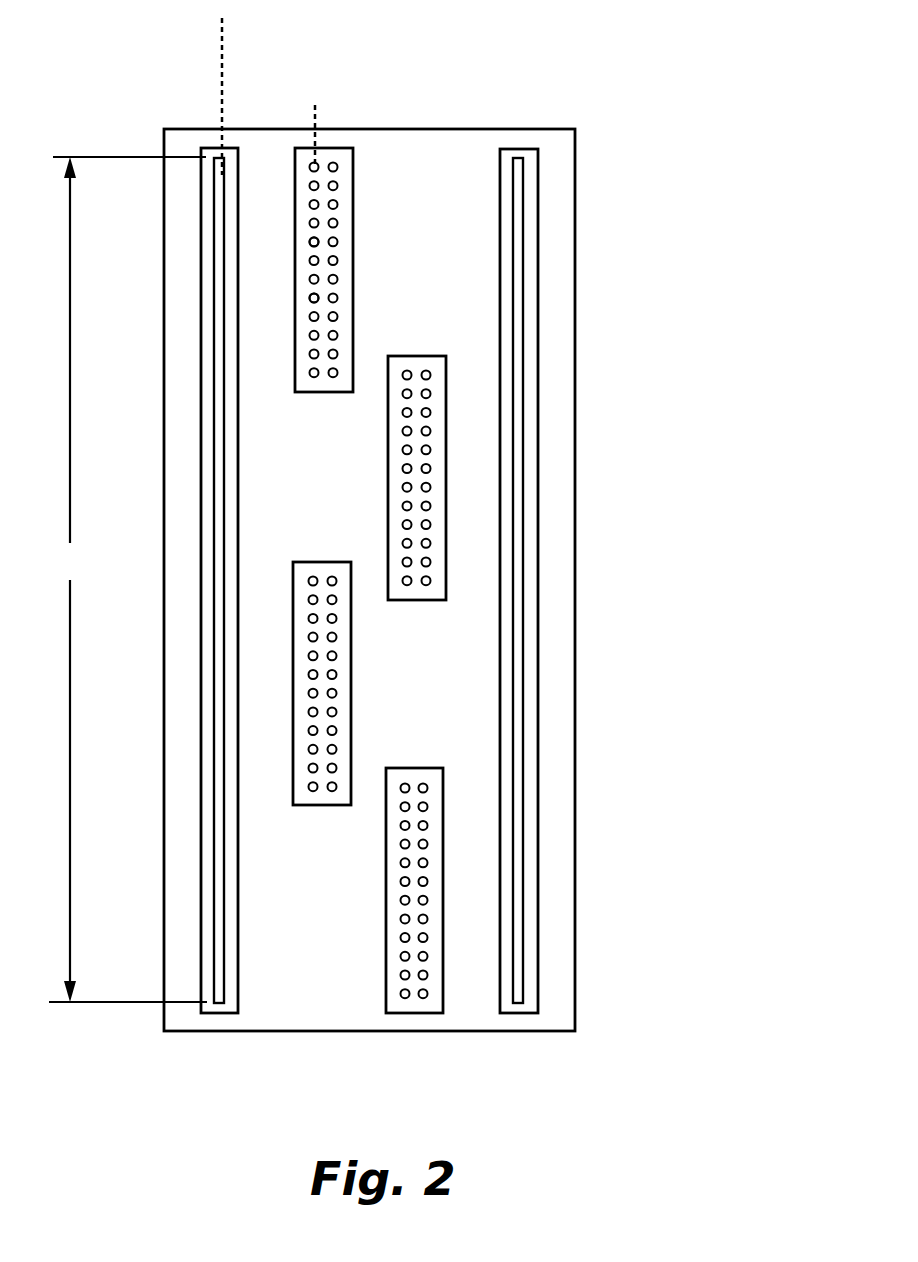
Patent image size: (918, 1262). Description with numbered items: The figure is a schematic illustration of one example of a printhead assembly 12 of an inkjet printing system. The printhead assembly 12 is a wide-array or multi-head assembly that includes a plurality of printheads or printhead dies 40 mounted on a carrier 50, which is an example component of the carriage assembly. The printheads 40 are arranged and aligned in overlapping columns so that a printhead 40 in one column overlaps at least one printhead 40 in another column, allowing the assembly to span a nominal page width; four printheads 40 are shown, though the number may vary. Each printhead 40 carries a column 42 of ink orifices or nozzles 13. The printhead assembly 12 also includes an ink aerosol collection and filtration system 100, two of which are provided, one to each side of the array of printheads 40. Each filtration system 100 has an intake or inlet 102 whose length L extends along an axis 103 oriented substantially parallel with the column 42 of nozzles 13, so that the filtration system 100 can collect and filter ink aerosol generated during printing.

The printhead assembly 12 is at (522, 53).
The ink orifices or nozzles 13 is at (314, 243).
The printhead dies 40 is at (342, 252).
The column of ink orifices or nozzles 42 is at (315, 120).
The carrier 50 is at (553, 553).
The ink aerosol collection and filtration system 100 is at (195, 337).
The inlet 102 is at (220, 492).
The axis 103 is at (222, 52).